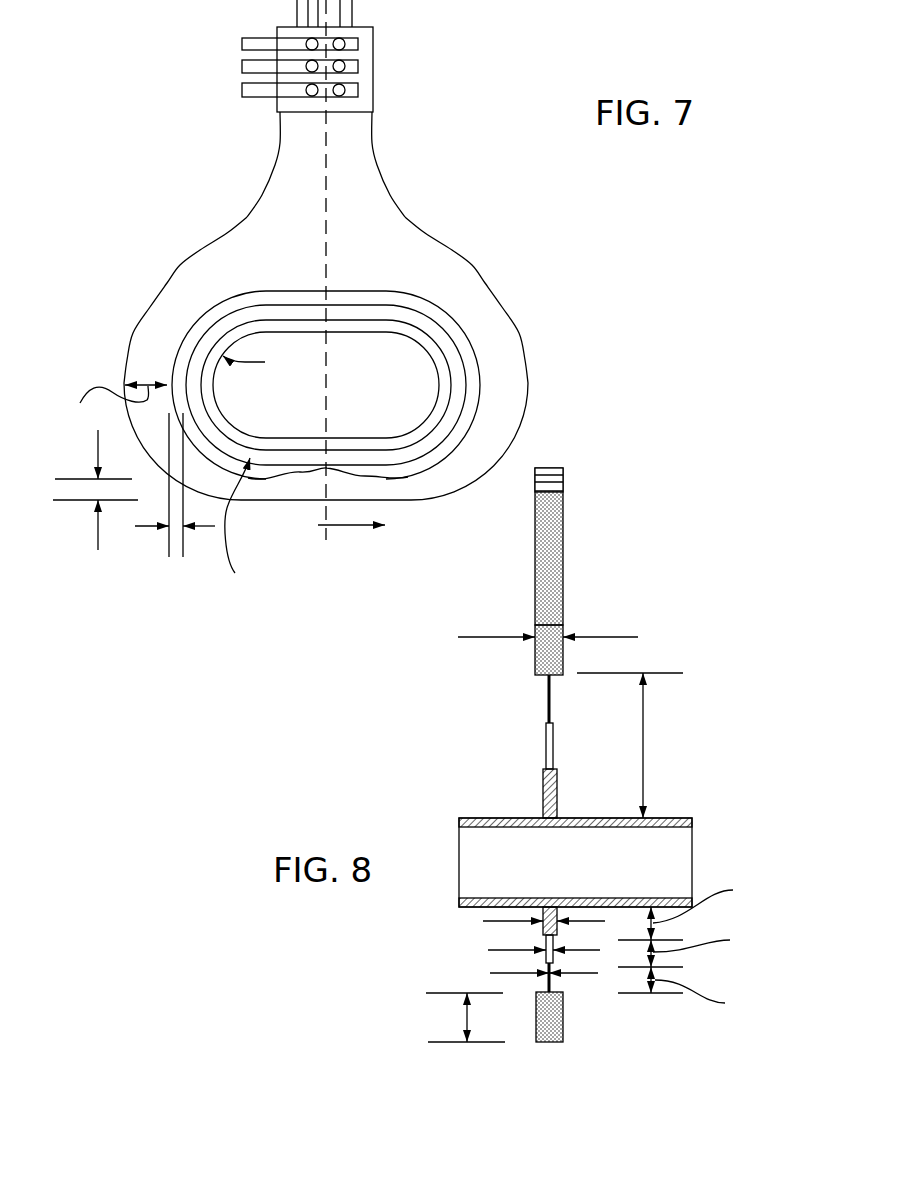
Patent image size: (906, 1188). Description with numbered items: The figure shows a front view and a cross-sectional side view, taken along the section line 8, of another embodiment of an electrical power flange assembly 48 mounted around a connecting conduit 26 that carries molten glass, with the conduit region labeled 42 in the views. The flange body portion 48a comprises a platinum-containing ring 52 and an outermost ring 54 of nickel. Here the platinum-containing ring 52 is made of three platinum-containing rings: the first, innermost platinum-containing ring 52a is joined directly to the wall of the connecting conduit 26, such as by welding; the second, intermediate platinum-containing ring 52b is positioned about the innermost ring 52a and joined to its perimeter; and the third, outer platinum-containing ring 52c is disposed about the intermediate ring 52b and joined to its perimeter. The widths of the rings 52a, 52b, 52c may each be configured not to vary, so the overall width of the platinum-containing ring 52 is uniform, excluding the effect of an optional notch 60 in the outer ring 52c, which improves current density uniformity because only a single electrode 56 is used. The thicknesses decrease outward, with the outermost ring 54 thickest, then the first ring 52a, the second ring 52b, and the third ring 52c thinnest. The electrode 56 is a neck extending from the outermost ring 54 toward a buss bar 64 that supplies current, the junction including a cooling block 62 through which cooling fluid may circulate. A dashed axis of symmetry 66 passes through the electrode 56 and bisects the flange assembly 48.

In FIG. 7, the section line of FIG. 8 is at (364, 525).
In FIG. 7, the connecting conduit 26 is at (432, 412).
In FIG. 8, the connecting conduit 26 is at (682, 818).
In FIG. 7, the vacuum chamber 42 is at (389, 391).
In FIG. 8, the vacuum chamber 42 is at (571, 874).
In FIG. 7, the flange assembly 48 is at (442, 160).
In FIG. 8, the flange assembly 48 is at (400, 742).
In FIG. 7, the flange body portion 48a is at (130, 300).
In FIG. 7, the platinum-containing ring 52 is at (483, 355).
In FIG. 7, the first platinum-containing ring 52a is at (205, 378).
In FIG. 8, the first platinum-containing ring 52a is at (543, 800).
In FIG. 7, the second intermediate platinum-containing ring 52b is at (440, 323).
In FIG. 8, the second intermediate platinum-containing ring 52b is at (547, 765).
In FIG. 7, the third outer platinum-containing ring 52c is at (440, 463).
In FIG. 8, the third outer platinum-containing ring 52c is at (549, 712).
In FIG. 7, the outermost ring 54 is at (443, 240).
In FIG. 8, the outermost ring 54 is at (535, 660).
In FIG. 7, the electrode 56 is at (280, 143).
In FIG. 8, the electrode 56 is at (563, 538).
In FIG. 7, the notch 60 is at (290, 477).
In FIG. 7, the cooling block 62 is at (373, 63).
In FIG. 7, the buss bar 64 is at (257, 37).
In FIG. 7, the axis of symmetry 66 is at (326, 157).